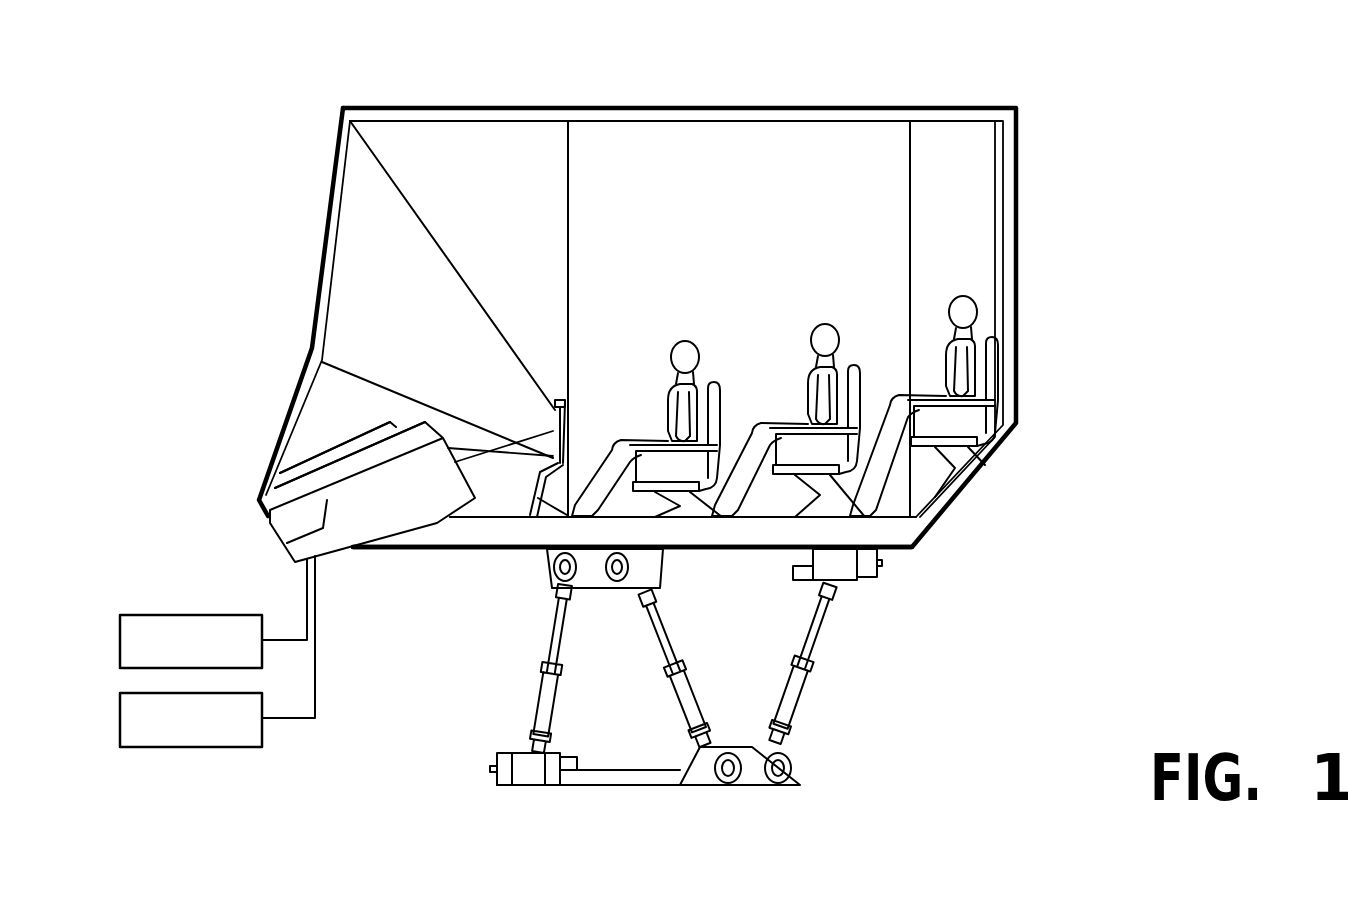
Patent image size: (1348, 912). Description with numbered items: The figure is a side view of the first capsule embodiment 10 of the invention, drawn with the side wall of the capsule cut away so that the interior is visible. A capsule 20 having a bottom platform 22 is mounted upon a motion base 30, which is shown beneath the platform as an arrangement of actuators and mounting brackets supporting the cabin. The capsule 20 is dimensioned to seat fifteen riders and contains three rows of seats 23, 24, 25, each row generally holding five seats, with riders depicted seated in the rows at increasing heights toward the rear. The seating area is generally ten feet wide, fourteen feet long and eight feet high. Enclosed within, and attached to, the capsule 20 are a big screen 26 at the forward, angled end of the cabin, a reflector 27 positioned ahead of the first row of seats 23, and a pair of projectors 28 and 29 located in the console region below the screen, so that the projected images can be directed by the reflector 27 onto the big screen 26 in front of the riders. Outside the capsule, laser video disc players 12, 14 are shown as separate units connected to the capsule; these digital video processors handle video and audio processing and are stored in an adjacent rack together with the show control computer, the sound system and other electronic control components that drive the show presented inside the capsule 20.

The first capsule embodiment 10 is at (92, 130).
The laser video disc player 12 is at (200, 661).
The laser video disc player 14 is at (200, 738).
The capsule 20 is at (742, 88).
The bottom platform 22 is at (432, 543).
The seat 23 is at (685, 481).
The seat 24 is at (825, 464).
The seat 25 is at (964, 439).
The big screen 26 is at (325, 272).
The reflector 27 is at (570, 410).
The projector 28 is at (411, 492).
The projector 29 is at (350, 472).
The motion base 30 is at (460, 662).